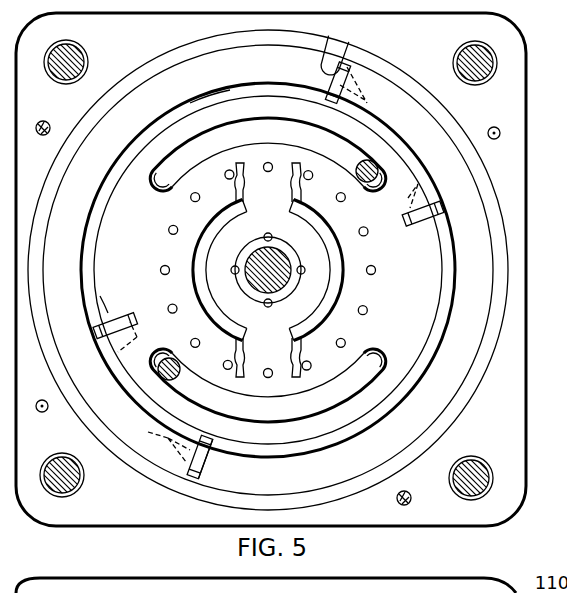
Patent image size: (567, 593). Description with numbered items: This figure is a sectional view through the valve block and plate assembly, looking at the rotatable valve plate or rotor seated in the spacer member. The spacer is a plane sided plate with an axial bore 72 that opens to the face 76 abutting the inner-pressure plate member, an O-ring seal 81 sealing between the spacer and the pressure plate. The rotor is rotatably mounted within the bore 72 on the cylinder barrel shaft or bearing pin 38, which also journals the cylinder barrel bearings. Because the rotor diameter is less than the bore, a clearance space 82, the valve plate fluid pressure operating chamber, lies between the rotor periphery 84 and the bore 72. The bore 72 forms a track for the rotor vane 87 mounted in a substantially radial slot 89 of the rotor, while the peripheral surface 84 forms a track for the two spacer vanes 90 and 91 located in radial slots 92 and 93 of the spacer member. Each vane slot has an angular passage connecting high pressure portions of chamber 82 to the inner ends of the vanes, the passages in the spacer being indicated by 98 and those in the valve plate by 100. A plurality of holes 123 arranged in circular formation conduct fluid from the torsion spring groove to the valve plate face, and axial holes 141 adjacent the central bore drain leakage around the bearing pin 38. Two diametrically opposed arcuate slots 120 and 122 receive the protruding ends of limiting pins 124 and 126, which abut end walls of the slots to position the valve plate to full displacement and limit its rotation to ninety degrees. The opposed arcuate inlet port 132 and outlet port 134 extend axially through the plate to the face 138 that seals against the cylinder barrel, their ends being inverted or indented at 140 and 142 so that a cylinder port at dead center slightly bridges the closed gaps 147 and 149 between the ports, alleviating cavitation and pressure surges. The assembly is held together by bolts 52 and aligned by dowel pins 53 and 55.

The cylinder barrel shaft or bearing pin 38 is at (268, 272).
The bolts 52 is at (268, 270).
The dowel pins 53 is at (494, 126).
The dowel pins 55 is at (46, 122).
The axial bore 72 is at (190, 103).
The face 76 is at (271, 269).
The O-ring seal 81 is at (457, 410).
The clearance space 82 is at (240, 86).
The periphery of the rotor 84 is at (165, 128).
The vane 87 is at (125, 316).
The radial slot 89 is at (108, 313).
The vane 90 is at (326, 80).
The vane 91 is at (214, 447).
The radial slot 92 is at (343, 38).
The radial slot 93 is at (200, 465).
The vane slot angular passages 98 is at (360, 96).
The vane slot angular passages 100 is at (137, 337).
The arcuately extending slot 120 is at (257, 120).
The arcuately extending slot 122 is at (300, 392).
The holes 123 is at (170, 226).
The limiting pin 124 is at (358, 163).
The limiting pin 126 is at (183, 372).
The inlet port 132 is at (342, 256).
The outlet port 134 is at (193, 258).
The face 138 is at (280, 270).
The inverted or indented end 140 is at (296, 163).
The axial holes 141 is at (264, 236).
The inverted or indented end 142 is at (268, 383).
The closed area gap 147 is at (244, 185).
The closed gap 149 is at (244, 353).